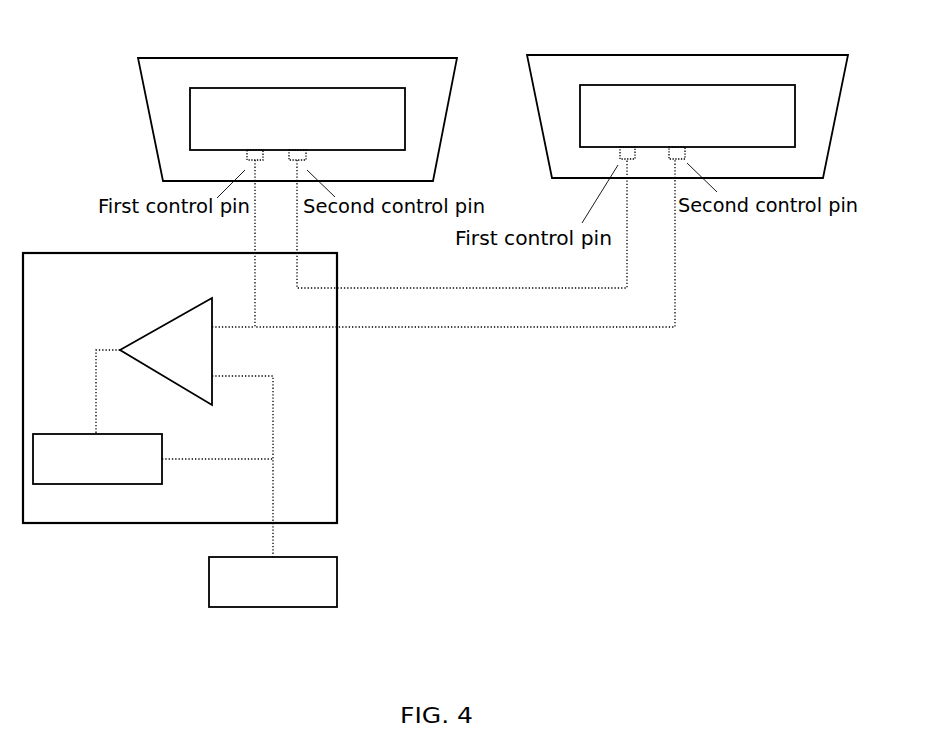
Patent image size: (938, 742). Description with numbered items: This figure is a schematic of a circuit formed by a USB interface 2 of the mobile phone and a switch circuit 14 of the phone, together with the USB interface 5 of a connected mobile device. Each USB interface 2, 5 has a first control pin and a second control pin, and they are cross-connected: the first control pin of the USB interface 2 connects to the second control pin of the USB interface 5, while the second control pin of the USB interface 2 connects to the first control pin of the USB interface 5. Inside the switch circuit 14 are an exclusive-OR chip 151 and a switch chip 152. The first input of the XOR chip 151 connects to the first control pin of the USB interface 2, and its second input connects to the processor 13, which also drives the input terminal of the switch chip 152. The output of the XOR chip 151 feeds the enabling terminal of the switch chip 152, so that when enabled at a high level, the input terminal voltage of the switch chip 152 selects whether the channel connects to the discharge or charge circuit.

The USB interface 2 is at (298, 50).
The USB interface 5 is at (688, 50).
The switch circuit 14 is at (45, 253).
The exclusive-OR (XOR) chip 151 is at (137, 337).
The switch chip 152 is at (110, 433).
The processor 13 is at (338, 582).